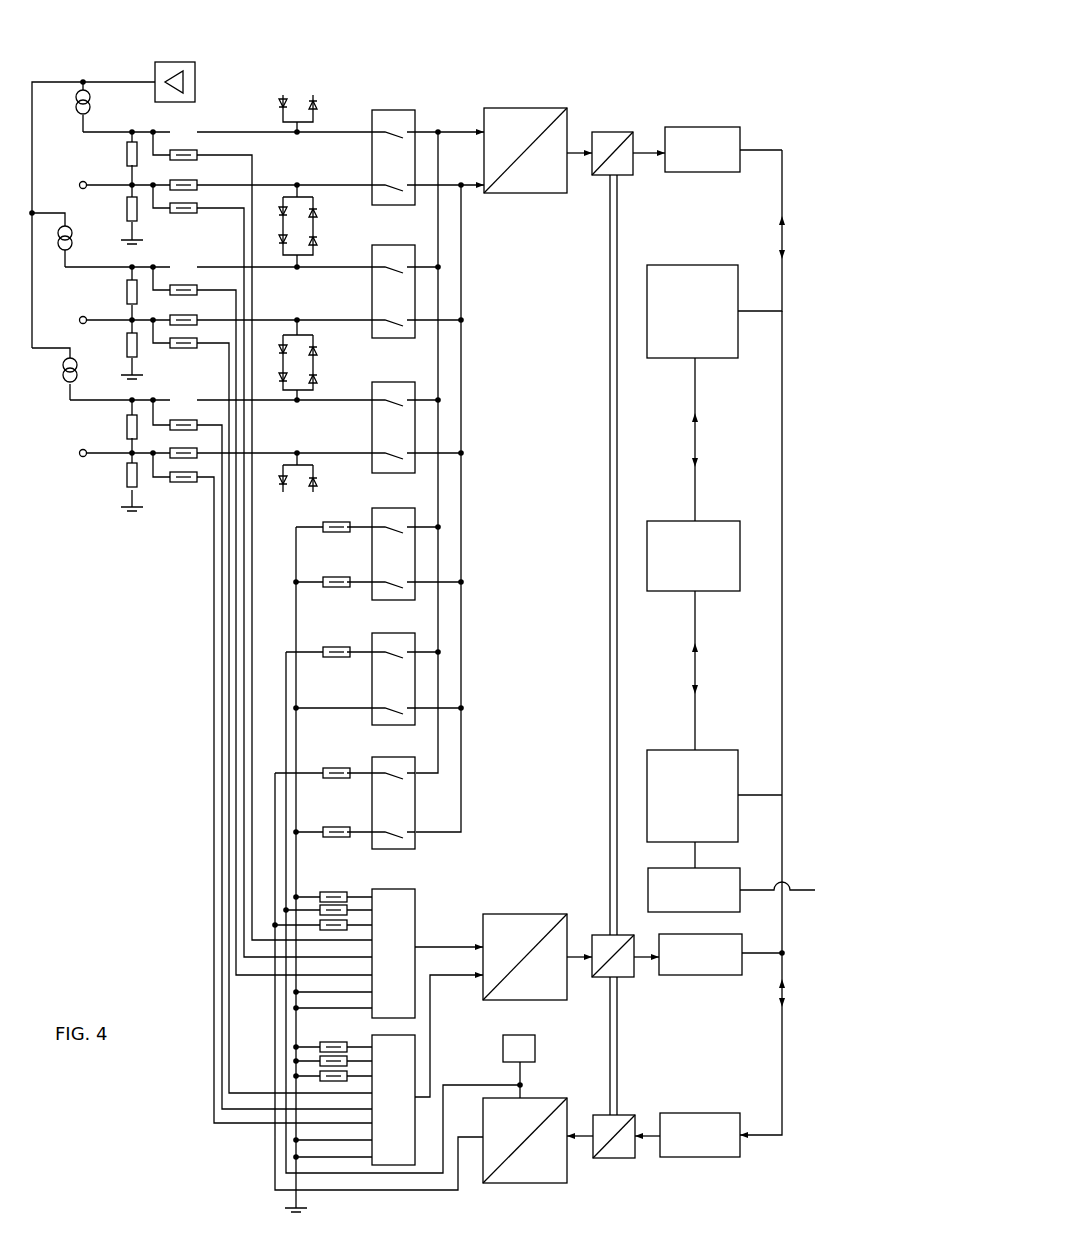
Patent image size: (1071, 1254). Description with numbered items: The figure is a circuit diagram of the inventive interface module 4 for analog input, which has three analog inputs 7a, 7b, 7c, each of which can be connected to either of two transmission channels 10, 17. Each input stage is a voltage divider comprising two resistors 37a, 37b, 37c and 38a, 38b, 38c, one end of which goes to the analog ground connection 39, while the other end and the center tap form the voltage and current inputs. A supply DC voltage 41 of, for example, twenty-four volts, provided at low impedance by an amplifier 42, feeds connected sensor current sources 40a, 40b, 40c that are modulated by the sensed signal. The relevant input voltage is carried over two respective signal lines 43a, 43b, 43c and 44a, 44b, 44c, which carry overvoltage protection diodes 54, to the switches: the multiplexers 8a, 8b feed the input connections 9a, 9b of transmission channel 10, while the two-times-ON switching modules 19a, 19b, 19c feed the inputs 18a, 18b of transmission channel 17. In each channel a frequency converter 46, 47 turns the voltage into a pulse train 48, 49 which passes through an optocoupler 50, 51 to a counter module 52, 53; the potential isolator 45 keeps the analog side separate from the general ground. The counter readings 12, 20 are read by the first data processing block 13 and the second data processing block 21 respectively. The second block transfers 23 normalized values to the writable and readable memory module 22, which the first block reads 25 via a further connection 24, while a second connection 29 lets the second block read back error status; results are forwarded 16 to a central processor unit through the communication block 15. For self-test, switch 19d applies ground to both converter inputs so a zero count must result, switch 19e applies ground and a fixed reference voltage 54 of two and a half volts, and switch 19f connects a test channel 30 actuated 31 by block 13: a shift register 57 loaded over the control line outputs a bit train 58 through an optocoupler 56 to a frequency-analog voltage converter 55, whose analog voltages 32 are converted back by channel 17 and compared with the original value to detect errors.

The interface module 4 is at (737, 92).
The analog input 7a is at (79, 185).
The analog input 7b is at (79, 320).
The analog input 7c is at (79, 453).
The multiplexer switch 8a is at (388, 900).
The multiplexer switch 8b is at (404, 1050).
The input connection 9a is at (453, 947).
The input connection 9b is at (453, 975).
The transmission channel 10 is at (574, 875).
The frequency-proportional counter reading 12 is at (783, 961).
The first data processing block 13 is at (722, 757).
The communication block 15 is at (738, 876).
The forwarding connection 16 is at (806, 888).
The transmission channel 17 is at (583, 224).
The input of transmission channel 17 18a is at (462, 130).
The input of transmission channel 17 18b is at (468, 190).
The switching module 19a is at (395, 109).
The switching module 19b is at (398, 232).
The switching module 19c is at (398, 370).
The test switch 19d is at (398, 500).
The test switch 19e is at (398, 625).
The test switch 19f is at (398, 748).
The digital value 20 is at (780, 240).
The second data processing block 21 is at (718, 348).
The writable and readable memory module 22 is at (667, 580).
The transfer connection 23 is at (697, 440).
The memory connection 24 is at (700, 592).
The read connection 25 is at (697, 670).
The second memory connection 29 is at (697, 517).
The test channel 30 is at (650, 1170).
The control line 31 is at (781, 1022).
The analog voltage 32 is at (272, 1150).
The voltage divider resistor 37a is at (127, 152).
The voltage divider resistor 37b is at (127, 290).
The voltage divider resistor 37c is at (127, 425).
The voltage divider resistor 38a is at (127, 207).
The voltage divider resistor 38b is at (127, 343).
The voltage divider resistor 38c is at (127, 473).
The analog ground connection 39 is at (143, 241).
The sensor current source 40a is at (76, 102).
The sensor current source 40b is at (71, 240).
The sensor current source 40c is at (72, 374).
The supply DC voltage 41 is at (52, 80).
The amplifier 42 is at (195, 82).
The signal line 43a is at (250, 130).
The signal line 43b is at (272, 268).
The signal line 43c is at (272, 402).
The signal line 44a is at (304, 184).
The signal line 44b is at (336, 318).
The signal line 44c is at (335, 451).
The potential isolator 45 is at (609, 560).
The frequency converter 46 is at (518, 913).
The analog frequency converter 47 is at (520, 108).
The pulse train 48 is at (575, 960).
The pulse train 49 is at (572, 150).
The optocoupler 50 is at (627, 978).
The optocoupler 51 is at (608, 135).
The counter module 52 is at (700, 972).
The counter module 53 is at (700, 135).
The overvoltage protection diodes / reference voltage 54 is at (315, 96).
The frequency-analog voltage converter 55 is at (572, 1166).
The optocoupler 56 is at (600, 1118).
The shift register 57 is at (696, 1122).
The shift register output 58 is at (656, 1135).